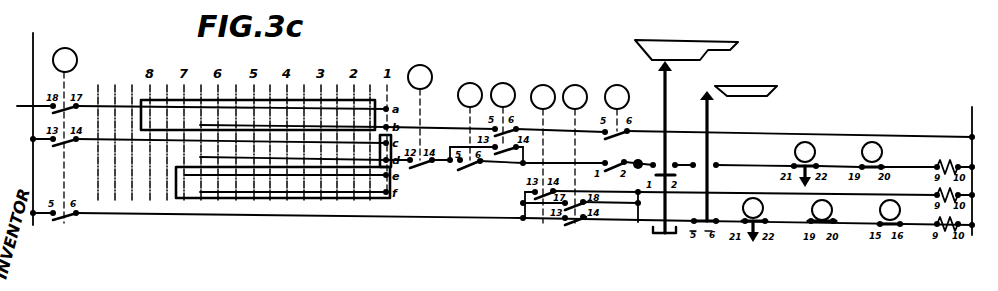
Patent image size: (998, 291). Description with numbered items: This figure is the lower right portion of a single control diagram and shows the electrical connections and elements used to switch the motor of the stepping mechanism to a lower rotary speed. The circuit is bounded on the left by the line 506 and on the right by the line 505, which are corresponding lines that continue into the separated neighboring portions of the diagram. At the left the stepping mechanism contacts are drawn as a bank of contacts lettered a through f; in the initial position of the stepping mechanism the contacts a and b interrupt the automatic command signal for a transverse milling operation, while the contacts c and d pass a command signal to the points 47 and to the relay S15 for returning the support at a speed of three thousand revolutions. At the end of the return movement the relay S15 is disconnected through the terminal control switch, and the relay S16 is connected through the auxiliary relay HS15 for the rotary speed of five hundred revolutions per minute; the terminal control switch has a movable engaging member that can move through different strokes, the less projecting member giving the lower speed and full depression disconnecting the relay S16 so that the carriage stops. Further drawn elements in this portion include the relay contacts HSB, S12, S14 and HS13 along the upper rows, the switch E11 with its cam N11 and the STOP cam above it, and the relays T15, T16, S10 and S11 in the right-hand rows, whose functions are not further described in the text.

The line 505 is at (972, 111).
The line 506 is at (33, 40).
The points 47 is at (653, 143).
The relay HSB I HSB is at (75, 40).
The relay S12 is at (473, 76).
The relay S14 is at (503, 83).
The relay S15 is at (545, 79).
The auxiliary relay HS15 is at (575, 85).
The relay HS13 I HS13 is at (682, 82).
The switch E11 is at (710, 113).
The cam N11 is at (758, 86).
The stop cam III STOP is at (686, 41).
The relay T15 is at (793, 152).
The relay T16 is at (743, 208).
The relay S10 is at (862, 152).
The relay S11 is at (812, 210).
The relay S16 is at (936, 222).